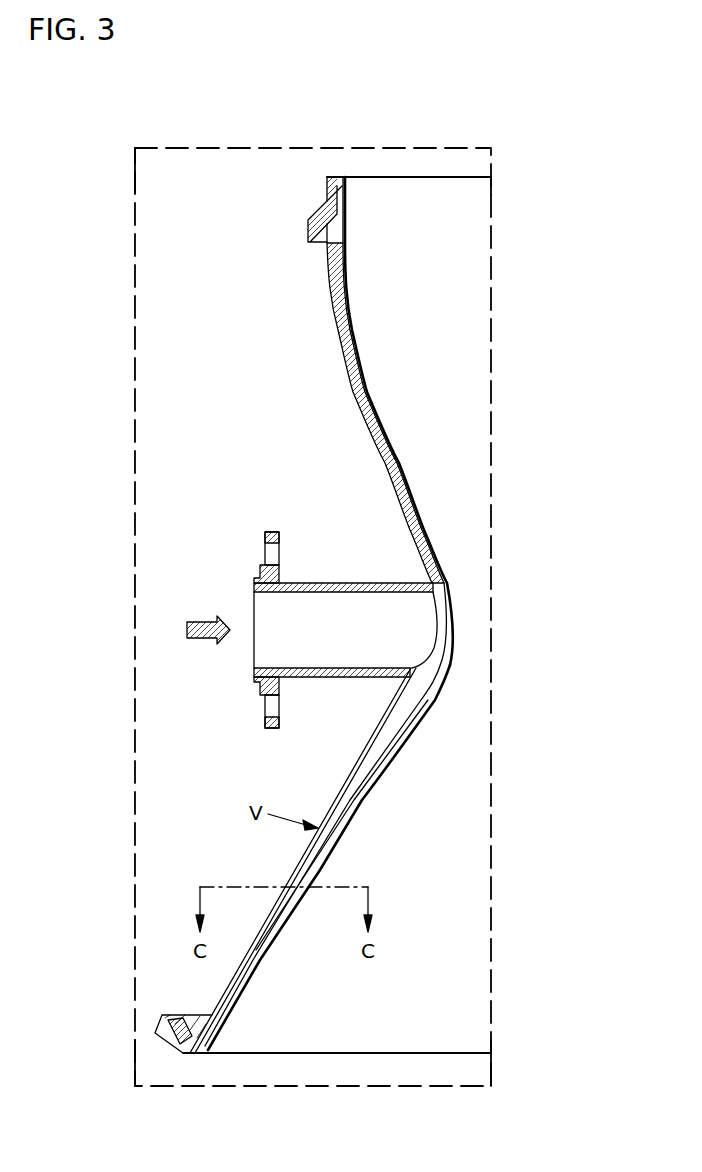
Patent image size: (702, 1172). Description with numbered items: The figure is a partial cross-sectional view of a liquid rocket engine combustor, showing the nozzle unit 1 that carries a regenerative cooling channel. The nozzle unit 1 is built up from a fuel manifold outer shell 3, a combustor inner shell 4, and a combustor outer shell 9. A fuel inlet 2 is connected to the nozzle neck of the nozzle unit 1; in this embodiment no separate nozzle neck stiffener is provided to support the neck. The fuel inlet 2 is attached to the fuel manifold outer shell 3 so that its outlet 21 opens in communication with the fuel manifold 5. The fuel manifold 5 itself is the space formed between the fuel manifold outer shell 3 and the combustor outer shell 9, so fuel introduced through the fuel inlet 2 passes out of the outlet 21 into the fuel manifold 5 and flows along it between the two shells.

The nozzle unit 1 is at (308, 344).
The fuel inlet 2 is at (252, 583).
The fuel manifold outer shell 3 is at (360, 768).
The combustor inner shell 4 is at (393, 760).
The fuel manifold 5 is at (400, 715).
The combustor outer shell 9 is at (353, 392).
The outlet 21 is at (433, 642).